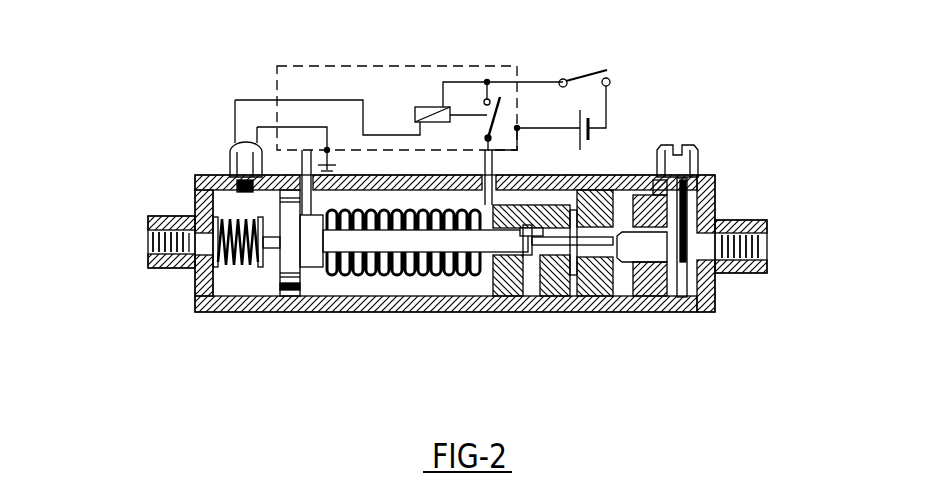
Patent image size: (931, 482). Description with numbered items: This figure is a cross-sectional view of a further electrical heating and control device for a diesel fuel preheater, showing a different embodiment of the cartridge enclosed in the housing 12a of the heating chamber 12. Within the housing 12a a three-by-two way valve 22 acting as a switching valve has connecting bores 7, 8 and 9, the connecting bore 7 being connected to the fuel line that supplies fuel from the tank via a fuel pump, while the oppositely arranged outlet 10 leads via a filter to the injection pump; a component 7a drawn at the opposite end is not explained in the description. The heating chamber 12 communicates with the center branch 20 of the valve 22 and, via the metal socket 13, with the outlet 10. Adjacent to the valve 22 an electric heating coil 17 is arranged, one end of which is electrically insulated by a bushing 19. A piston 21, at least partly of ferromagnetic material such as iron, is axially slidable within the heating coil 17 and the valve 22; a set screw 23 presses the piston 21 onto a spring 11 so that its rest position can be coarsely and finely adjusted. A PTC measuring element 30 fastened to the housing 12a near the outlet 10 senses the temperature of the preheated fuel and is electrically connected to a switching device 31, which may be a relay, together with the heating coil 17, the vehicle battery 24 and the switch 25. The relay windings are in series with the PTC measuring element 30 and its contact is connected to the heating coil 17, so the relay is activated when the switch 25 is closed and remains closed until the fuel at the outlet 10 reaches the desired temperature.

The connecting bore 7 is at (688, 312).
The threaded fitting 7a is at (767, 243).
The connecting bore 8 is at (622, 312).
The connecting bore 9 is at (532, 312).
The outlet 10 is at (147, 243).
The spring 11 is at (197, 217).
The heating chamber 12 is at (222, 203).
The housing 12a is at (720, 188).
The metal socket 13 is at (222, 175).
The heating coil 17 is at (340, 275).
The bushing 19 is at (480, 275).
The center branch 20 is at (570, 312).
The piston 21 is at (660, 260).
The 3/2 way valve 22 is at (685, 147).
The set screw 23 is at (700, 155).
The battery 24 is at (592, 122).
The switch 25 is at (582, 72).
The PTC measuring element 30 is at (233, 152).
The switching device 31 is at (401, 131).